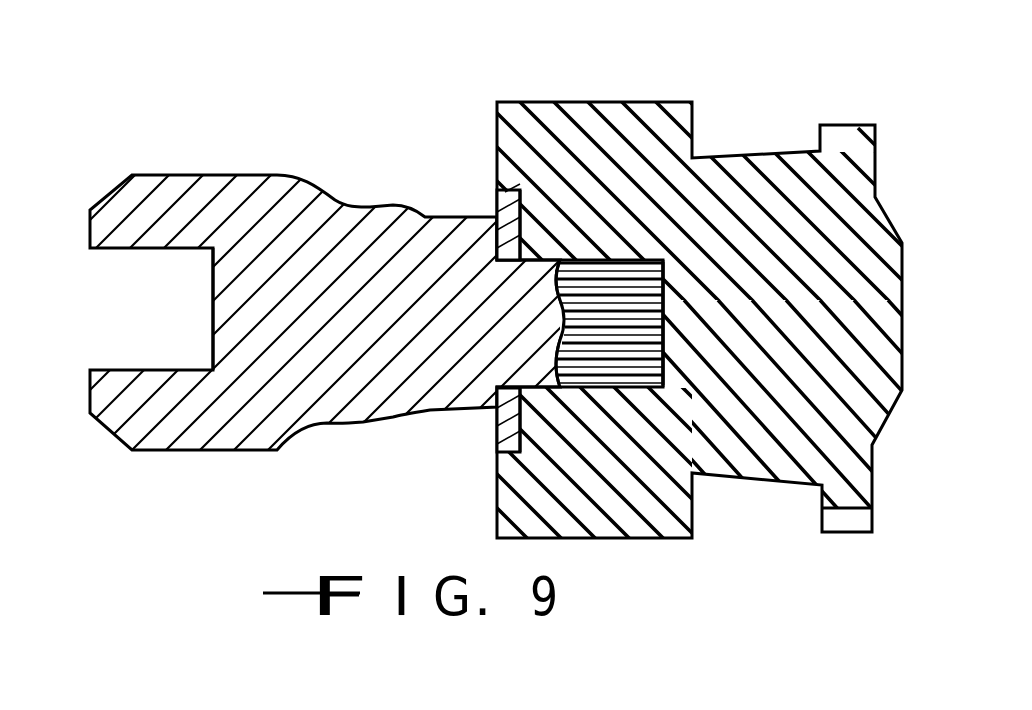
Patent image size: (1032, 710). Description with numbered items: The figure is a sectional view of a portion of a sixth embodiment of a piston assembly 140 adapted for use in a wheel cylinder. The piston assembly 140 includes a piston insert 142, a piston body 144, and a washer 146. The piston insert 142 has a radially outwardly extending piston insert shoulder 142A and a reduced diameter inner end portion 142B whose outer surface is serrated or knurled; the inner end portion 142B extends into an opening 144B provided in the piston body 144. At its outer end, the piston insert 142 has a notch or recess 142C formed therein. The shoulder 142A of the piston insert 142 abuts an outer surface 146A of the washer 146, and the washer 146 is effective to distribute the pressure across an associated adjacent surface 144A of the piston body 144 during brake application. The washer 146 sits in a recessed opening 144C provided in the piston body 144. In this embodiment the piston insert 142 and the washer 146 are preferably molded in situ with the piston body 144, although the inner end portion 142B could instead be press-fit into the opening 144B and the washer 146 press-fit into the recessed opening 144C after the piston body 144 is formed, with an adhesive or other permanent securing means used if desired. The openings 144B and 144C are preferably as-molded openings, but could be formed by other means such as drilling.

The piston assembly 140 is at (266, 131).
The piston insert 142 is at (183, 458).
The piston insert shoulder 142A is at (496, 147).
The reduced diameter inner end portion 142B is at (630, 273).
The notch or recess 142C is at (150, 368).
The piston body 144 is at (646, 544).
The adjacent surface 144A is at (497, 216).
The opening 144B is at (665, 388).
The recessed opening 144C is at (495, 200).
The washer 146 is at (497, 450).
The outer surface 146A is at (497, 420).